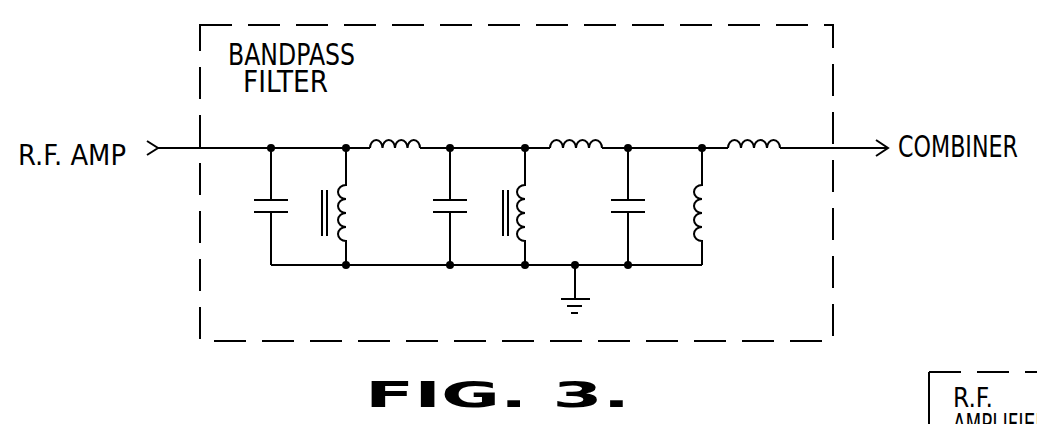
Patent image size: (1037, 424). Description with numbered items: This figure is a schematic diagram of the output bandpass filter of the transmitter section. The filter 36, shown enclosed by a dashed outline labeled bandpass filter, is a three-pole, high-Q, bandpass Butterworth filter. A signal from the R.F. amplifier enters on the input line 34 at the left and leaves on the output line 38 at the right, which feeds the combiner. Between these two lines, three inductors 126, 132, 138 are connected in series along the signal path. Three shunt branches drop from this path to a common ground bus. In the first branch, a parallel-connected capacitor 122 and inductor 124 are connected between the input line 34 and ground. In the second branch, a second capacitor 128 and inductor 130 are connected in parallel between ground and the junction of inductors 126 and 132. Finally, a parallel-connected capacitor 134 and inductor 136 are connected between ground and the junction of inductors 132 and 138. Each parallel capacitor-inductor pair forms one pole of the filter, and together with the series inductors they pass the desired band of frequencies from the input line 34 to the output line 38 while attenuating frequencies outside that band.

The input line 34 is at (177, 150).
The filter 36 is at (835, 64).
The output line 38 is at (850, 150).
The capacitor 122 is at (262, 206).
The inductor 124 is at (354, 200).
The inductor 126 is at (397, 138).
The second capacitor 128 is at (432, 208).
The inductor 130 is at (528, 200).
The inductor 132 is at (568, 138).
The capacitor 134 is at (617, 206).
The inductor 136 is at (708, 207).
The inductor 138 is at (743, 138).